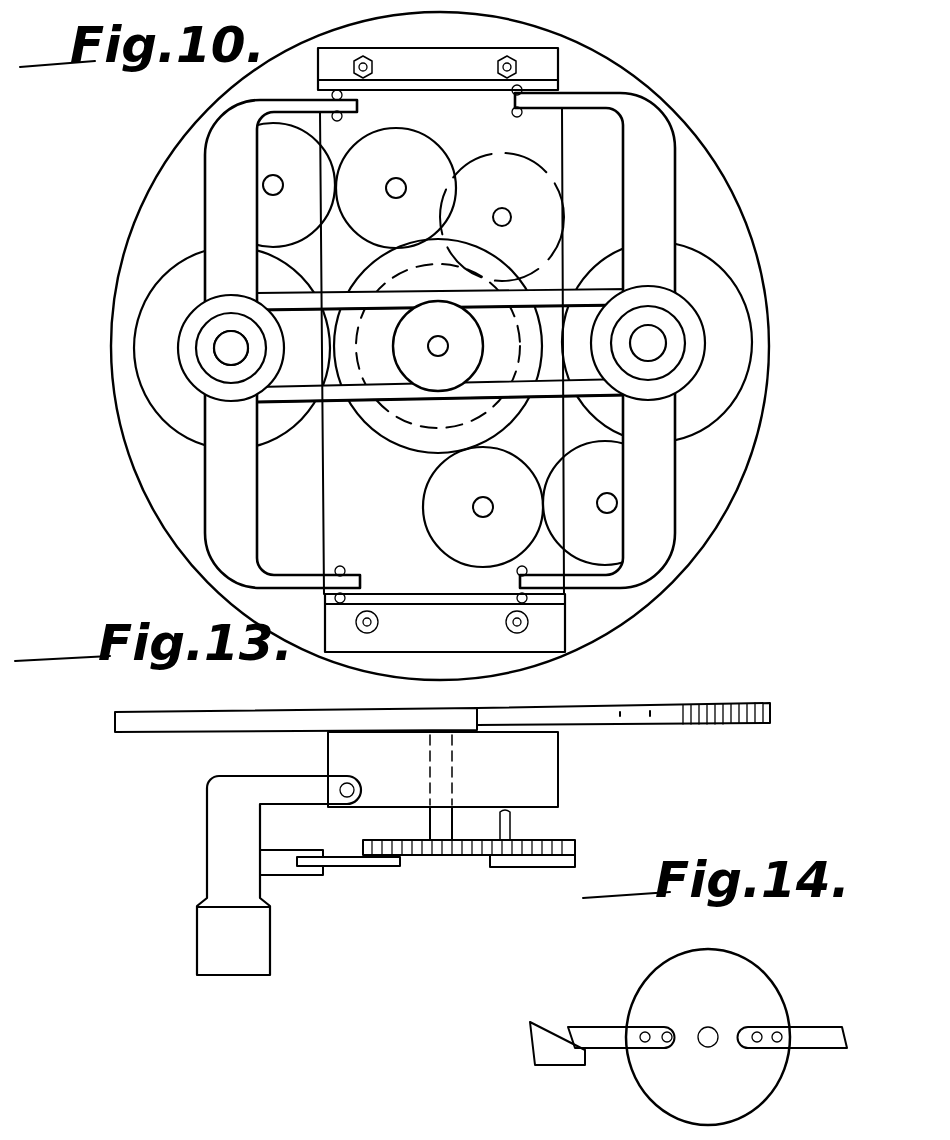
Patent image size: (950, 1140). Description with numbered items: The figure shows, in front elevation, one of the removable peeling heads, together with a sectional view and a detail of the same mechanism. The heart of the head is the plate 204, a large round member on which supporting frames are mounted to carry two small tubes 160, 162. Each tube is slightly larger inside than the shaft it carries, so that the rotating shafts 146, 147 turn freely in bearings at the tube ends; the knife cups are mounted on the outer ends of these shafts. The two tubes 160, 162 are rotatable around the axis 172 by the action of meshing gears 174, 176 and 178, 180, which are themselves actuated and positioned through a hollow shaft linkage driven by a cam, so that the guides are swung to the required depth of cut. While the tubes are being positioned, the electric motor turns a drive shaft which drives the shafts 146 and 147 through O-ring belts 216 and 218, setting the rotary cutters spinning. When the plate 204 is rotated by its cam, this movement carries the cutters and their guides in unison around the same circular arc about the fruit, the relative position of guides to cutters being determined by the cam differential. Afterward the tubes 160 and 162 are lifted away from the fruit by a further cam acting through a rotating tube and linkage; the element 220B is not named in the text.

In FIG. 10, the plate 204 is at (732, 208).
In FIG. 10, the meshing gear 180 is at (720, 412).
In FIG. 10, the meshing gear 178 is at (300, 233).
In FIG. 10, the meshing gear 176 is at (415, 234).
In FIG. 10, the meshing gear 174 is at (418, 452).
In FIG. 10, the O-ring belt 218 is at (546, 398).
In FIG. 10, the O-ring belt 216 is at (318, 452).
In FIG. 10, the axis 172 is at (230, 348).
In FIG. 10, the tube 160 is at (225, 356).
In FIG. 10, the rotating shaft 146 is at (218, 365).
In FIG. 10, the tube 162 is at (660, 336).
In FIG. 10, the rotating shaft 147 is at (656, 352).
In FIG. 13, the latch bar 220B is at (340, 864).
In FIG. 14, the latch bar 220B is at (847, 1013).